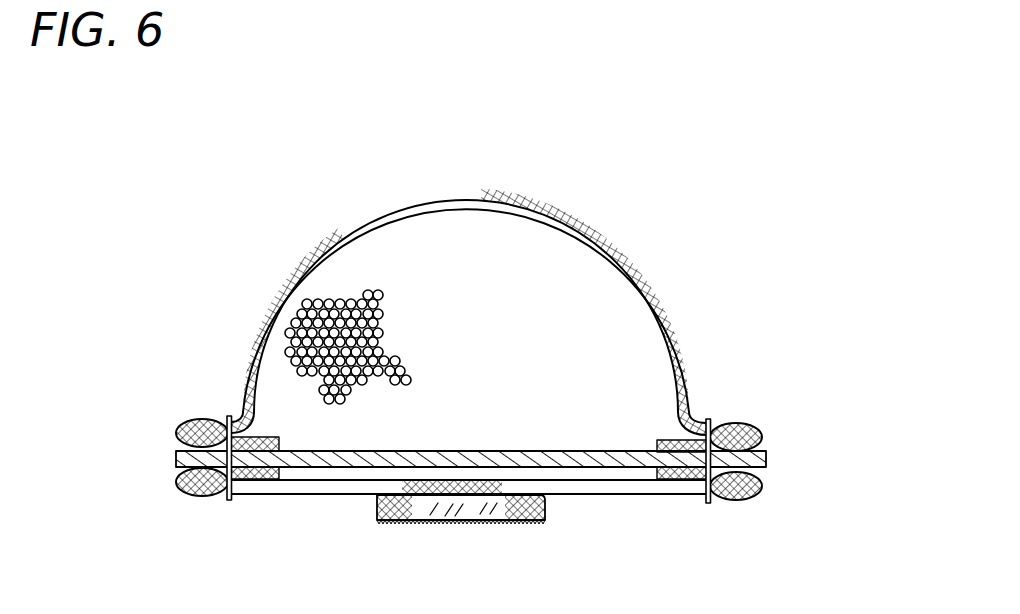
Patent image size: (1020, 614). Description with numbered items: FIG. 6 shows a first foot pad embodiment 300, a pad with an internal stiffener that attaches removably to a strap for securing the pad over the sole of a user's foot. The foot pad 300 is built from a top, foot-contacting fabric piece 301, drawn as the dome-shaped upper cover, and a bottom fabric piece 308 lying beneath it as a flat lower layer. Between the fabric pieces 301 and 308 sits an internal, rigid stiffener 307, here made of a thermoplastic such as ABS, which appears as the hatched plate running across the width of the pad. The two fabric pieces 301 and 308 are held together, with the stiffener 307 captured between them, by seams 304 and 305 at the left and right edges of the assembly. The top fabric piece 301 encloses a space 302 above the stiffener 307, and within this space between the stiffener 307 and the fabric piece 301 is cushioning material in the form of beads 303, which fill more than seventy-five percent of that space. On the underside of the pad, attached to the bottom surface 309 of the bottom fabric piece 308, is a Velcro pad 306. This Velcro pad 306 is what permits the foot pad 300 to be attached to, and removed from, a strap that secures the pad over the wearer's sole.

The foot pad 300 is at (473, 384).
The top fabric piece 301 is at (680, 331).
The cavity 302 is at (533, 270).
The beads 303 is at (343, 310).
The seam 304 is at (227, 414).
The seam 305 is at (709, 424).
The Velcro pad 306 is at (480, 521).
The stiffener 307 is at (768, 459).
The bottom fabric piece 308 is at (347, 495).
The bottom surface 309 is at (658, 500).